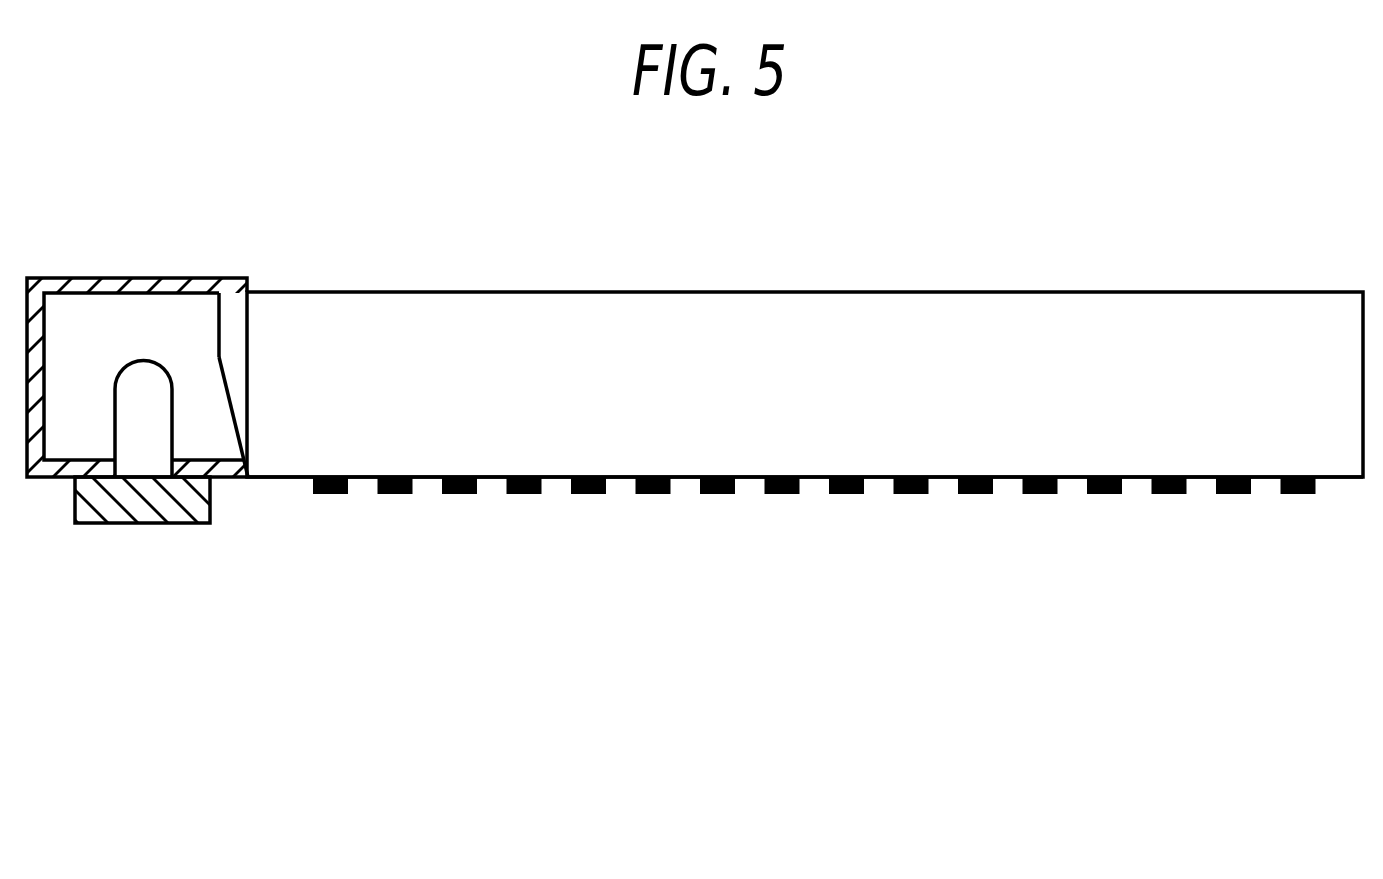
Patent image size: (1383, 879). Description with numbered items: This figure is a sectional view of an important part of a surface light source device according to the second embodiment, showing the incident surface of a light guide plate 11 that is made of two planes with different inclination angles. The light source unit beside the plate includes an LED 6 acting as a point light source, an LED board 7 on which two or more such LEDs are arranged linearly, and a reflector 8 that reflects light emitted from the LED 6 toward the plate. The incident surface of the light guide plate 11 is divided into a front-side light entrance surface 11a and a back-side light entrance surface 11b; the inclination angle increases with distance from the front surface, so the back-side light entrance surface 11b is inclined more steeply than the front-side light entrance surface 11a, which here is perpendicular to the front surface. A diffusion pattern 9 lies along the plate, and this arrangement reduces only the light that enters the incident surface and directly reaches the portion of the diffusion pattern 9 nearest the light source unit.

The LED 6 is at (128, 362).
The LED board 7 is at (133, 523).
The reflector 8 is at (145, 282).
The diffusion pattern 9 is at (467, 494).
The light guide plate 11 is at (1238, 291).
The front-side light entrance surface 11a is at (218, 338).
The back-side light entrance surface 11b is at (240, 440).